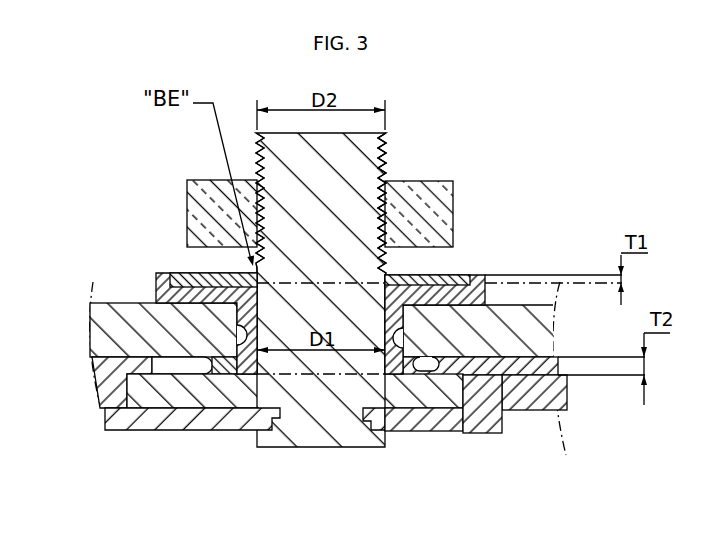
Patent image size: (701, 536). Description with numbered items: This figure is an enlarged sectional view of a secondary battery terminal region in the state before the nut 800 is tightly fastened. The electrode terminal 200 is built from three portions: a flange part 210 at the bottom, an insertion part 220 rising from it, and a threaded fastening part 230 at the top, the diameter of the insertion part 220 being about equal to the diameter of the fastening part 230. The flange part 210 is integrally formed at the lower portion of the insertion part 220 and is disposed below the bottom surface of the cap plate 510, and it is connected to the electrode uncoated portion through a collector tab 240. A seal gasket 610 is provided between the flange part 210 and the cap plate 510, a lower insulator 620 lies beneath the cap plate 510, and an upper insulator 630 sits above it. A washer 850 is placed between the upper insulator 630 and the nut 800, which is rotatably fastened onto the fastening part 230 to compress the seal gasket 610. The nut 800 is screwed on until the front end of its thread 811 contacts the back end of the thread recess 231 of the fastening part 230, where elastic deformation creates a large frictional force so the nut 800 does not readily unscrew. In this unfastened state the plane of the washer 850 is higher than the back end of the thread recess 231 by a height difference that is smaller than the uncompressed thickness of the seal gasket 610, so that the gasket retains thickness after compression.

The electrode terminal 200 is at (347, 128).
The flange part 210 is at (153, 387).
The insertion part 220 is at (280, 304).
The fastening part 230 is at (277, 168).
The thread recess 231 is at (387, 152).
The collector tab 240 is at (173, 420).
The cap plate 510 is at (100, 328).
The seal gasket 610 is at (410, 367).
The lower insulator 620 is at (527, 405).
The upper insulator 630 is at (487, 298).
The nut 800 is at (455, 178).
The thread 811 is at (375, 186).
The washer 850 is at (457, 275).